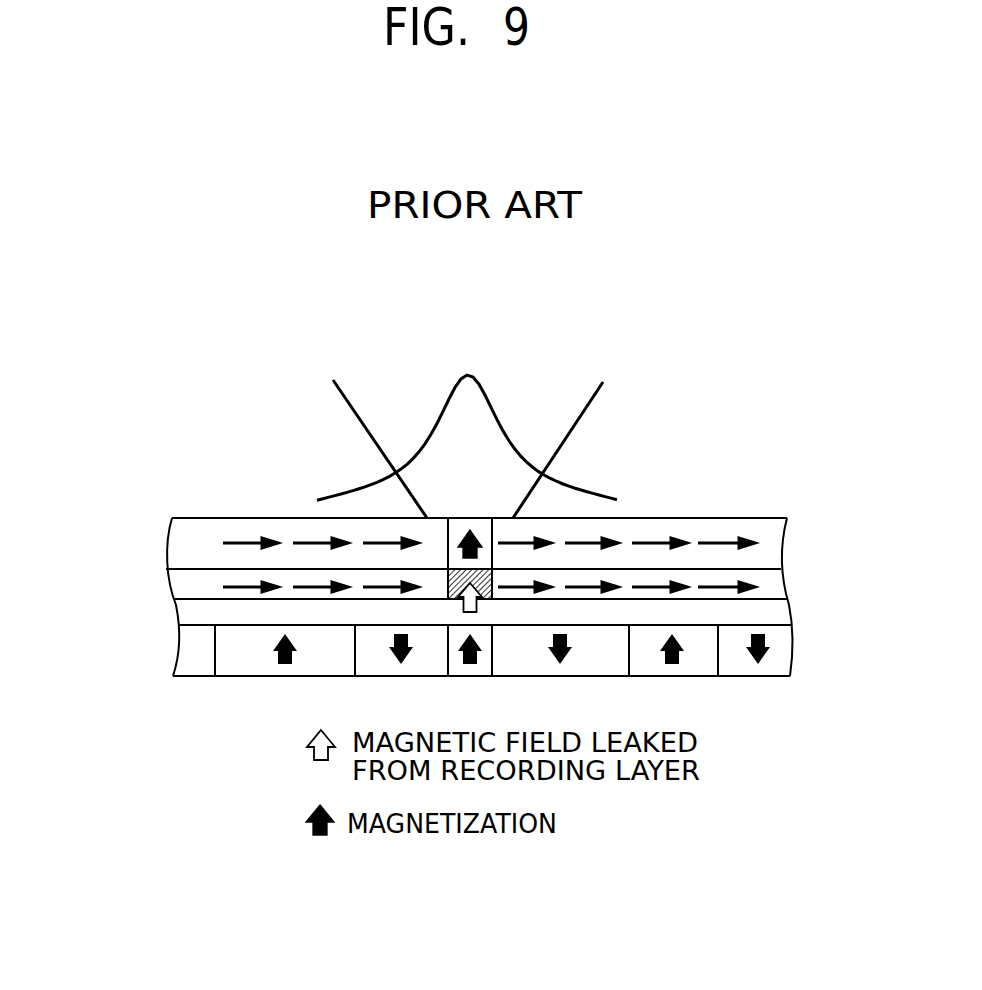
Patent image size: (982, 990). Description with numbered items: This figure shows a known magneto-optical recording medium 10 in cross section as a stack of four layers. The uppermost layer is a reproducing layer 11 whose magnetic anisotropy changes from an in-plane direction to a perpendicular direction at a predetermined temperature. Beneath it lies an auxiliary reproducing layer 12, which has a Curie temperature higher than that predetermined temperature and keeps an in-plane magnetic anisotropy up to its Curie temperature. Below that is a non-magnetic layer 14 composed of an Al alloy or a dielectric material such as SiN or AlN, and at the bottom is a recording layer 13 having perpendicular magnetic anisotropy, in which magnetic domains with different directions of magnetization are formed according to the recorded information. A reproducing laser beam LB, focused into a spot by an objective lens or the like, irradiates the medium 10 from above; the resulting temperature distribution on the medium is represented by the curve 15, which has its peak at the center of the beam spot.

The magneto-optical recording medium 10 is at (158, 547).
The reproducing layer 11 is at (775, 545).
The auxiliary reproducing layer 12 is at (775, 585).
The recording layer 13 is at (783, 650).
The non-magnetic layer 14 is at (773, 618).
The curve 15 is at (588, 492).
The reproducing laser beam LB is at (597, 397).